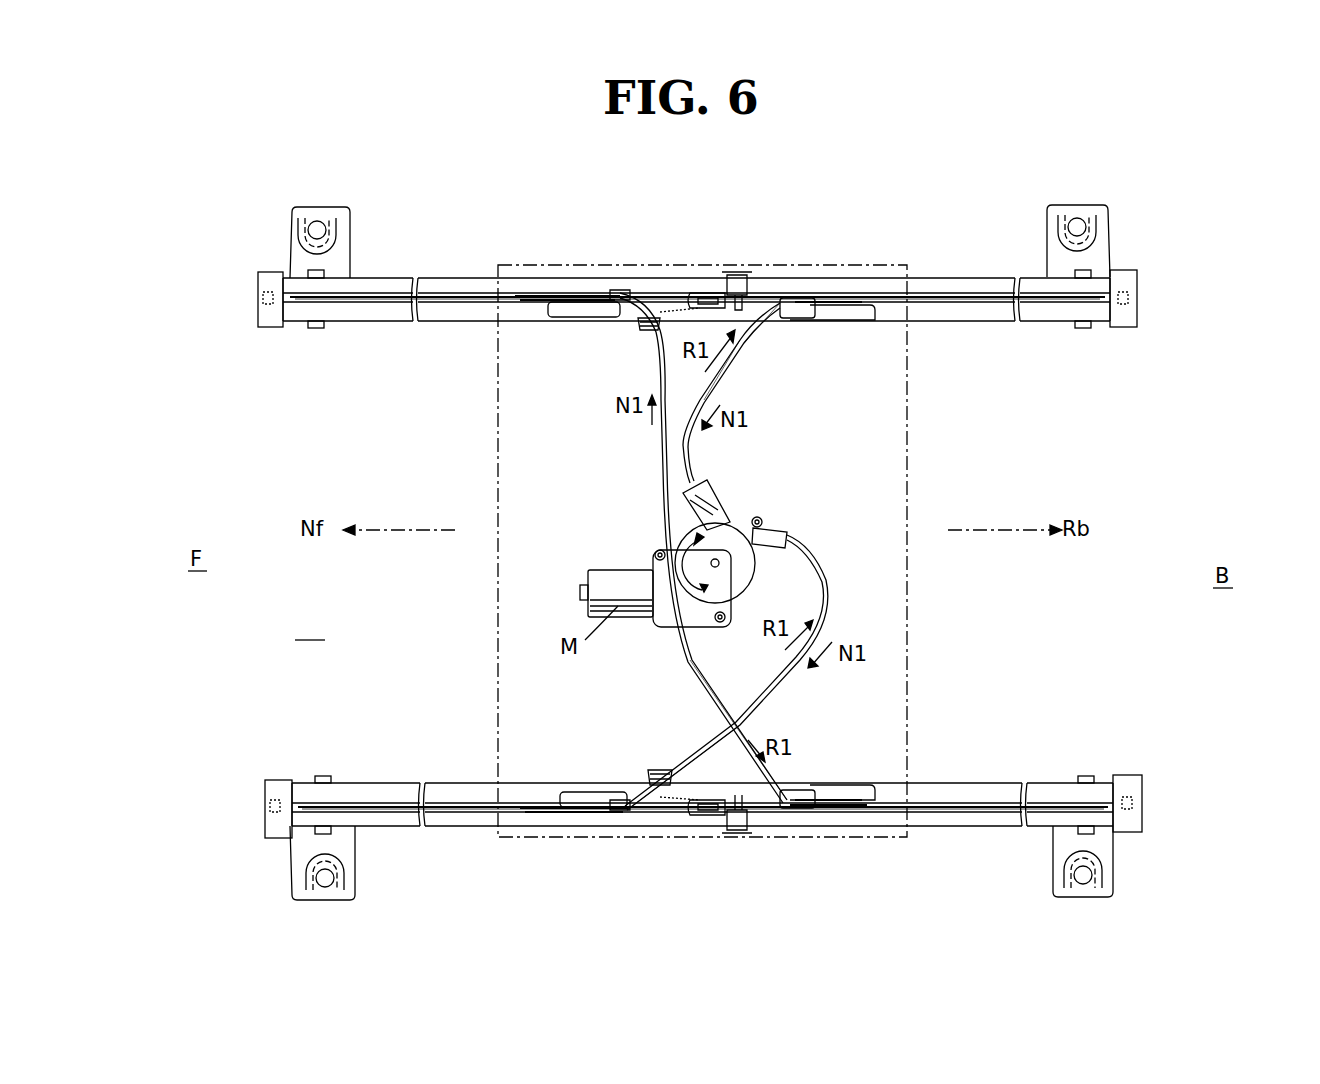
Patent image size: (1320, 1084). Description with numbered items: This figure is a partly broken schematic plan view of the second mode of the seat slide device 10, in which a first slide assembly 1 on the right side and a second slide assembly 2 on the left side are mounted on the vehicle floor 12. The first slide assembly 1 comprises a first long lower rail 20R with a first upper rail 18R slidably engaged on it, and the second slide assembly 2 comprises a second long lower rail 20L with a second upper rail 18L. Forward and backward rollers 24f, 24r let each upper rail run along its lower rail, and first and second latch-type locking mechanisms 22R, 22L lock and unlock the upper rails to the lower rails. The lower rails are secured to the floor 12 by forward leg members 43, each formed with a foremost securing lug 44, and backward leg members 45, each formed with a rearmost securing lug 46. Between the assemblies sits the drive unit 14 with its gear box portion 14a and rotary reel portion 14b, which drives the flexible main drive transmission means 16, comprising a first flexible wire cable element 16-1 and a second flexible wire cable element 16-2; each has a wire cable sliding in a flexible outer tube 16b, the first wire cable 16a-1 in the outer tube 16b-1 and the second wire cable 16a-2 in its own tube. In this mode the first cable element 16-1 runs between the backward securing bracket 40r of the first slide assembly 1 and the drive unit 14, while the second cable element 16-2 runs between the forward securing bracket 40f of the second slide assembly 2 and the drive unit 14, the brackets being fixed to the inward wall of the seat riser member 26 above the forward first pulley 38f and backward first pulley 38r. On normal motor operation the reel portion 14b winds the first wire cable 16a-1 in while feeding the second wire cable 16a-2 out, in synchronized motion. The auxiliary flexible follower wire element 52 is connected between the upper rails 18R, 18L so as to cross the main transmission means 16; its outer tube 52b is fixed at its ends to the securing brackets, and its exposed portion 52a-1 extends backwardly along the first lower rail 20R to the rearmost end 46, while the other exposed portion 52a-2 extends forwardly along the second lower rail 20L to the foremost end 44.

The first slide assembly 1 is at (980, 188).
The second slide assembly 2 is at (1145, 735).
The seat slide device 10 is at (1185, 372).
The vehicle floor 12 is at (310, 627).
The drive unit 14 is at (625, 638).
The gear box portion 14a is at (652, 552).
The rotary reel portion 14b is at (758, 572).
The flexible main drive transmission means 16 is at (686, 466).
The first flexible wire cable element 16-1 is at (742, 385).
The second flexible wire cable element 16-2 is at (705, 752).
The first wire cable 16a-1 is at (442, 305).
The second wire cable 16a-2 is at (990, 812).
The outer tube 16b is at (800, 535).
The outer tube of first flexible wire cable element 16b-1 is at (745, 350).
The first upper rail 18R is at (768, 292).
The second upper rail 18L is at (770, 830).
The first long lower rail 20R is at (450, 270).
The second long lower rail 20L is at (438, 780).
The first latch-type locking mechanism 22R is at (710, 282).
The second latch-type locking mechanism 22L is at (710, 835).
The forward roller 24f is at (552, 312).
The backward roller 24r is at (880, 292).
The seat riser member 26 is at (908, 465).
The forward first pulley 38f is at (590, 292).
The backward first pulley 38r is at (848, 292).
The forward securing bracket 40f is at (628, 292).
The backward securing bracket 40r is at (795, 292).
The forward leg member 43 is at (295, 252).
The foremost securing lug 44 is at (262, 322).
The backward leg member 45 is at (1047, 252).
The rearmost securing lug 46 is at (1135, 272).
The auxiliary flexible follower wire element 52 is at (655, 358).
The one exposed portion of the follower wire cable 52a-1 is at (985, 310).
The another exposed portion of the follower wire cable 52a-2 is at (452, 812).
The outer tube of the follower wire element 52b is at (695, 680).